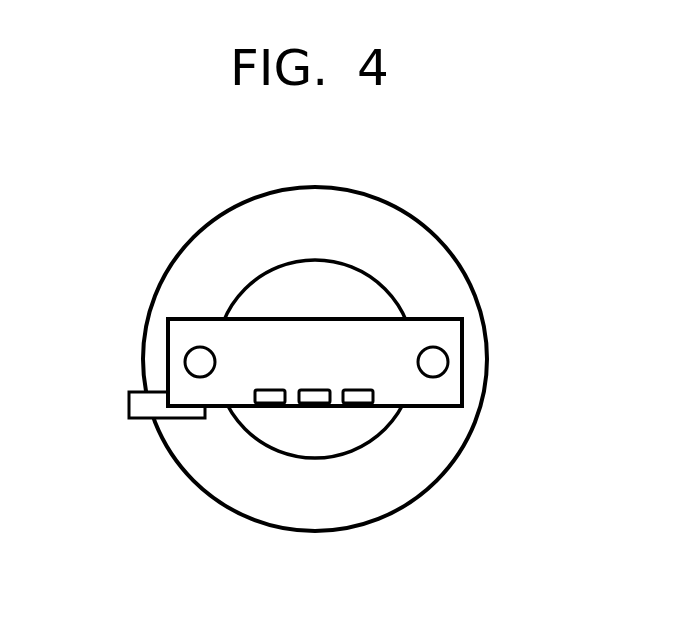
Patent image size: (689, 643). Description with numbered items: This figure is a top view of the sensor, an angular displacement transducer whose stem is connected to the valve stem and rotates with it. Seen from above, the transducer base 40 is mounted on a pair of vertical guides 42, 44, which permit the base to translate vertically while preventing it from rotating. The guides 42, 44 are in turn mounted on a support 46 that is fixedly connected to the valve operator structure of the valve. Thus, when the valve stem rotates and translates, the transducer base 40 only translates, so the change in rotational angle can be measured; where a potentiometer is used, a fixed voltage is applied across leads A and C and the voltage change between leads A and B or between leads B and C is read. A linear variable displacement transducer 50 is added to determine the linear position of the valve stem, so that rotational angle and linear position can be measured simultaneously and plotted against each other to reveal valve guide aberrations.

The transducer base 40 is at (253, 318).
The vertical guide 42 is at (187, 352).
The vertical guide 44 is at (447, 358).
The support 46 is at (437, 233).
The linear variable displacement transducer 50 is at (128, 398).